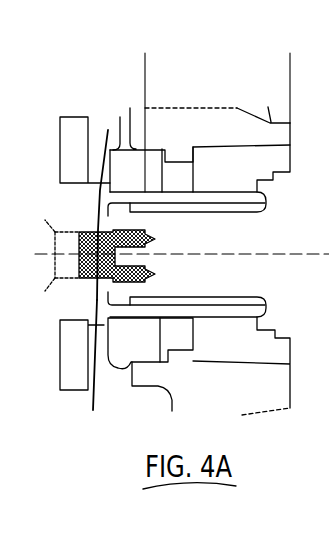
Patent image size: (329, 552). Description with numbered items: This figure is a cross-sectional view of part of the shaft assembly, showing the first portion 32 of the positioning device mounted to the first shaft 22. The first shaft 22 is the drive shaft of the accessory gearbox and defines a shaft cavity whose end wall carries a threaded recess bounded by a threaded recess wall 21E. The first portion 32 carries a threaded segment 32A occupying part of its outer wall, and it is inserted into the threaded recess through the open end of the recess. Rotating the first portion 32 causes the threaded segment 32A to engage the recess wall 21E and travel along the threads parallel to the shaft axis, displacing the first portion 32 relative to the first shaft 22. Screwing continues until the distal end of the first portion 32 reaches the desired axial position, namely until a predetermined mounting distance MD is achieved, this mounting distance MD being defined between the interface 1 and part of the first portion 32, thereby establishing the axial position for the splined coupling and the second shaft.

The polishing pad conditioner / body 1 is at (292, 358).
The first shaft 22 is at (65, 192).
The shaft end 21E is at (71, 263).
The first portion 32 is at (108, 201).
The threaded segment 32A is at (95, 370).
The mounting distance MD is at (288, 62).